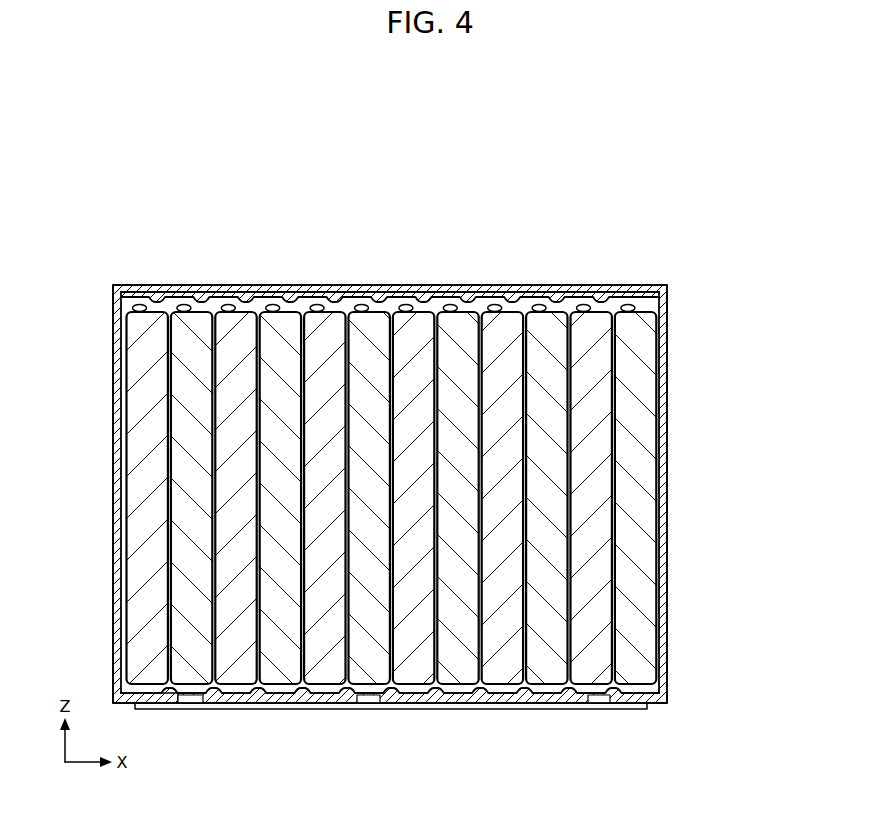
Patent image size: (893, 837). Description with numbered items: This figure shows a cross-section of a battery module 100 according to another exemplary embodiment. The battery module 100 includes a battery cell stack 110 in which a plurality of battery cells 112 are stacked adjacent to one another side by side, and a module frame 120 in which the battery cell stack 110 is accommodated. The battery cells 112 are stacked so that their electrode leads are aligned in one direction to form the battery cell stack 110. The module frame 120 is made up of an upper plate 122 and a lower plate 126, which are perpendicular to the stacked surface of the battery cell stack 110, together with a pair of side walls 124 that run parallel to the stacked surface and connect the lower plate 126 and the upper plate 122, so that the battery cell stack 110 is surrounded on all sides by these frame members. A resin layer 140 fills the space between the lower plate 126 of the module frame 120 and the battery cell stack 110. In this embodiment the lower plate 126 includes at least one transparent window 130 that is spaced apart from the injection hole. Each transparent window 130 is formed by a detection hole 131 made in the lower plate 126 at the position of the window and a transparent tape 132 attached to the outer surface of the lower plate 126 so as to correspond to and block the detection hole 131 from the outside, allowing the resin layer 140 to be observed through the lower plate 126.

The battery module 100 is at (312, 178).
The battery cell stack 110 is at (100, 478).
The battery cell 112 is at (638, 318).
The module frame 120 is at (682, 478).
The upper plate 122 is at (140, 292).
The side wall 124 is at (663, 525).
The lower plate 126 is at (166, 703).
The transparent window 130 is at (442, 759).
The detection hole 131 is at (368, 703).
The transparent tape 132 is at (418, 703).
The resin layer 140 is at (258, 693).